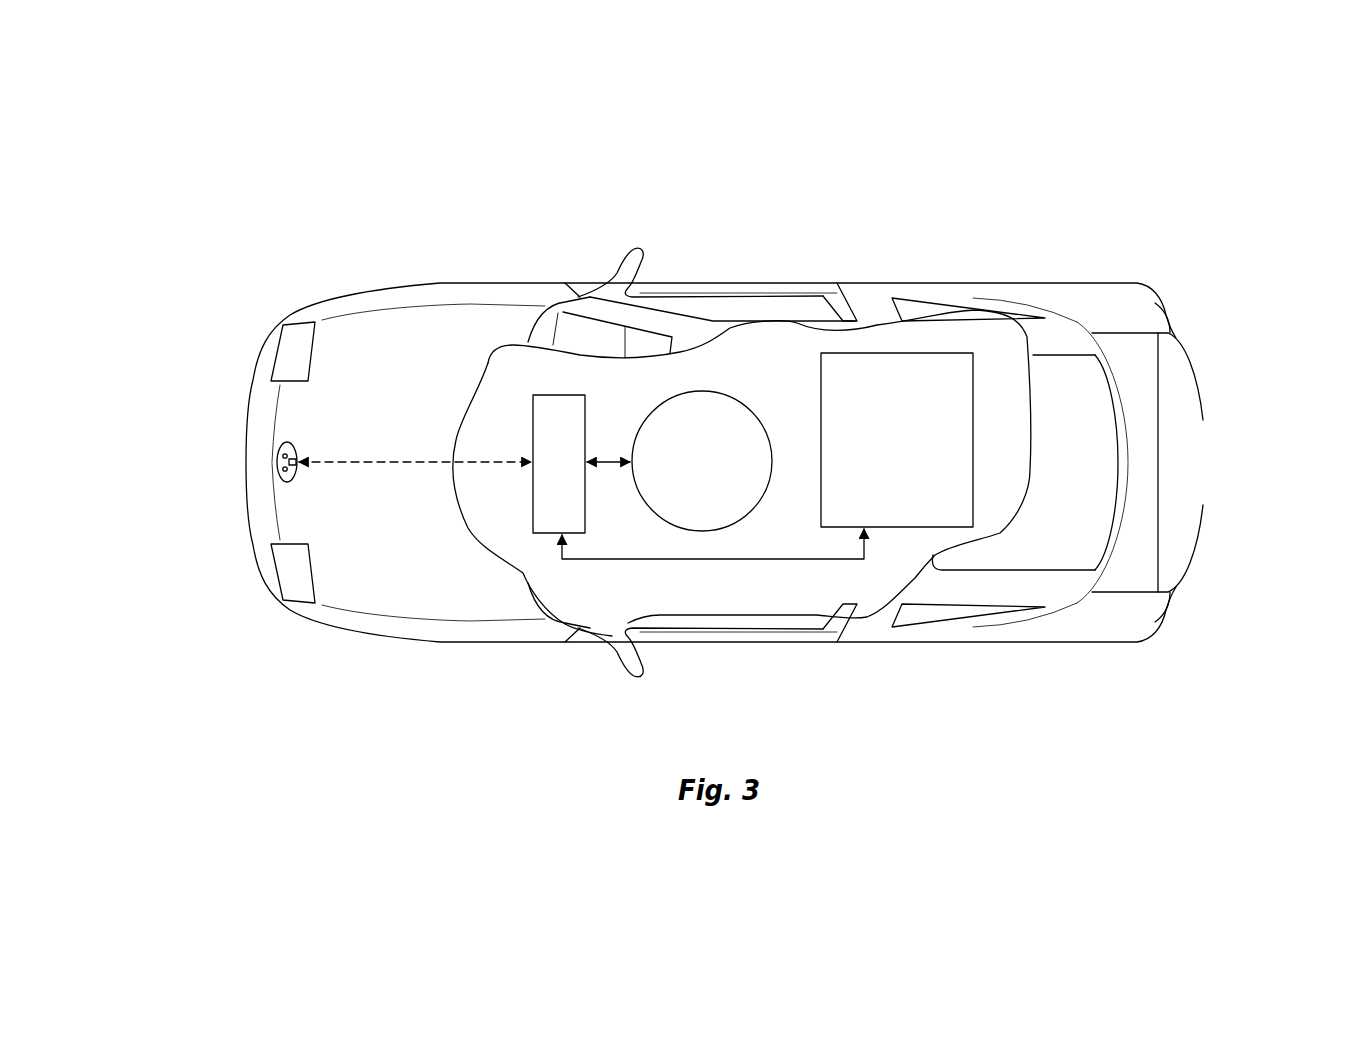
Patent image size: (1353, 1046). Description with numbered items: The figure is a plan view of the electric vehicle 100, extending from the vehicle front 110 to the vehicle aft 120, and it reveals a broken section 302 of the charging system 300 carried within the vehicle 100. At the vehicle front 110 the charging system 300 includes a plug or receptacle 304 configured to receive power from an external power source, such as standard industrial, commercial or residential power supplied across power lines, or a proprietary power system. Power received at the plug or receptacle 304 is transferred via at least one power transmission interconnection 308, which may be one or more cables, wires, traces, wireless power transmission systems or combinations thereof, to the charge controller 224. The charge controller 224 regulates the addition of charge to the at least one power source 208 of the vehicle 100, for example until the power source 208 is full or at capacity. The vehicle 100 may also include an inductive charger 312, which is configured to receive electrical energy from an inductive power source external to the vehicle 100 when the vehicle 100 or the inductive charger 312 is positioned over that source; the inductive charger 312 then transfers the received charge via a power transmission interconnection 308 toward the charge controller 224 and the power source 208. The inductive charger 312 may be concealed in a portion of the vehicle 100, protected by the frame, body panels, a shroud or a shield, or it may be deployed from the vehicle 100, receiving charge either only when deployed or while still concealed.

The vehicle 100 is at (717, 411).
The vehicle front 110 is at (213, 515).
The vehicle aft 120 is at (1213, 549).
The power source 208 is at (913, 353).
The charge controller 224 is at (545, 395).
The charging system 300 is at (593, 593).
The broken section 302 is at (766, 599).
The plug or receptacle 304 is at (276, 461).
The power transmission interconnection 308 is at (607, 458).
The inductive charger 312 is at (712, 392).